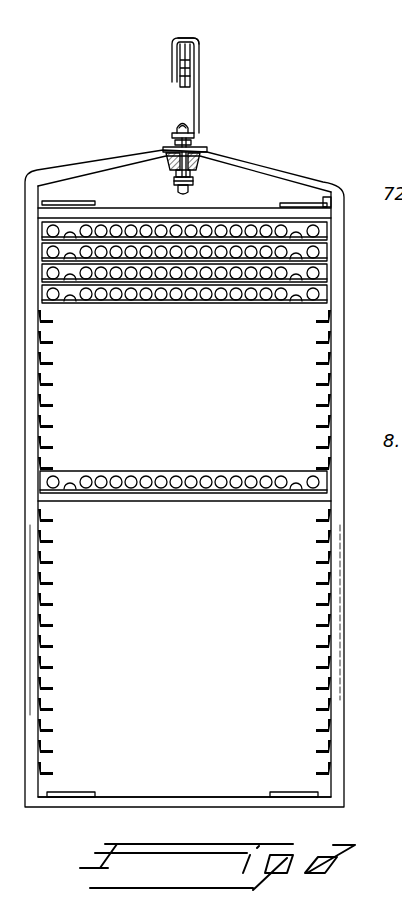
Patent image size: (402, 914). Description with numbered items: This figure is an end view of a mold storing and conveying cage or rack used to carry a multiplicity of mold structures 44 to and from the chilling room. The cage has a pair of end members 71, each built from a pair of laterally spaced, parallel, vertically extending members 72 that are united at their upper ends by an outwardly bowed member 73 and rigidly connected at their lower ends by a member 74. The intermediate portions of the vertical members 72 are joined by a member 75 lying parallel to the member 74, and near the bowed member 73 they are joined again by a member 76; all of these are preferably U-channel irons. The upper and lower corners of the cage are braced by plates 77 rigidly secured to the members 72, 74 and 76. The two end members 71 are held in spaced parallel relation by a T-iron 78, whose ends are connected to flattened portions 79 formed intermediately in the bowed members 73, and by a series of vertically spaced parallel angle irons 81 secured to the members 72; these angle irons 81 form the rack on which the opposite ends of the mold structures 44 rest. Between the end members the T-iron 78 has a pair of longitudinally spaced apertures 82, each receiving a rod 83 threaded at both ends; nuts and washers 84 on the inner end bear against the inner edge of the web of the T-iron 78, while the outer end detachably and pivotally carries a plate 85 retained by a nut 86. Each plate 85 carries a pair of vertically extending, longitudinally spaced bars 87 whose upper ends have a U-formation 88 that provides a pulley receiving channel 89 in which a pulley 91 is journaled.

The mold structure 44 is at (200, 255).
The end member 71 is at (307, 174).
The vertically extending member 72 is at (330, 583).
The outwardly bowed member 73 is at (113, 163).
The lower connecting member 74 is at (173, 802).
The intermediate connecting member 75 is at (268, 495).
The upper connecting member 76 is at (227, 213).
The brace plate 77 is at (67, 203).
The T-iron 78 is at (207, 157).
The flattened portion 79 is at (173, 155).
The angle iron 81 is at (50, 448).
The aperture 82 is at (174, 170).
The rod 83 is at (191, 170).
The nuts and washers 84 is at (179, 190).
The plate 85 is at (193, 137).
The nut 86 is at (182, 126).
The bar 87 is at (200, 93).
The U-formation 88 is at (182, 38).
The pulley receiving channel 89 is at (195, 40).
The pulley 91 is at (173, 78).